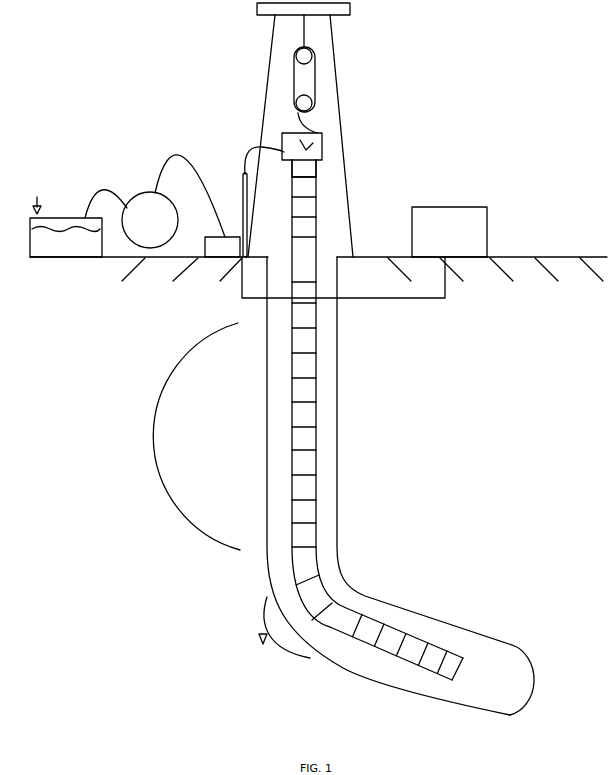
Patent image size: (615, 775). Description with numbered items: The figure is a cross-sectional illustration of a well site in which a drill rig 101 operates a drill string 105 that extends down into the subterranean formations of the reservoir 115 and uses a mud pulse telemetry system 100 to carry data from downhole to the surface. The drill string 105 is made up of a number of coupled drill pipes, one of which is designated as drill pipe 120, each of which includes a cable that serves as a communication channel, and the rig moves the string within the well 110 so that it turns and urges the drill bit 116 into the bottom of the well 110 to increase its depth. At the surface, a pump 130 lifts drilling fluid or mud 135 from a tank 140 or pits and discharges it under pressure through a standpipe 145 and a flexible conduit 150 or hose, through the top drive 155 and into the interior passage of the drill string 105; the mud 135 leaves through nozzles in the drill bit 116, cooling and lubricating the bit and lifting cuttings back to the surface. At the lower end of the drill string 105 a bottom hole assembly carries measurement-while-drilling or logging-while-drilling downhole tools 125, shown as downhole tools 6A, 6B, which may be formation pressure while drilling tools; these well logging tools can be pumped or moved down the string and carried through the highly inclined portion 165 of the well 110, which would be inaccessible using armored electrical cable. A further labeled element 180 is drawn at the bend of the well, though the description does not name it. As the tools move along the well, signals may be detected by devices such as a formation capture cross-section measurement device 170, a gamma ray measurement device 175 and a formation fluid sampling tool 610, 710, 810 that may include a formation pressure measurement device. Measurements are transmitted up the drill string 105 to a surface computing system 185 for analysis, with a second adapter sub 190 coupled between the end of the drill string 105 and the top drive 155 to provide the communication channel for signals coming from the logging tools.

The mud pulse telemetry system 100 is at (317, 602).
The drill rig 101 is at (412, 65).
The drill string 105 is at (150, 443).
The well 110 is at (399, 426).
The formation of reservoir 115 is at (495, 308).
The drill bit 116 is at (450, 668).
The drill pipe 120 is at (400, 486).
The downhole tools 125 is at (275, 628).
The pump 130 is at (173, 201).
The drilling fluid 135 is at (78, 223).
The tank 140 is at (35, 197).
The standpipe 145 is at (242, 185).
The flexible conduit 150 is at (257, 146).
The top drive 155 is at (323, 150).
The highly inclined portion 165 is at (538, 645).
The formation capture cross-section measurement device 170 is at (470, 647).
The gamma ray measurement device 175 is at (440, 652).
The curved section 180 is at (348, 602).
The surface computing system 185 is at (222, 247).
The second adapter sub 190 is at (316, 171).
The downhole tool 6A is at (399, 597).
The downhole tool 6B is at (357, 628).
The formation fluid sampling tool 610 is at (445, 614).
The formation fluid sampling tool 710 is at (445, 614).
The formation fluid sampling tool 810 is at (385, 642).